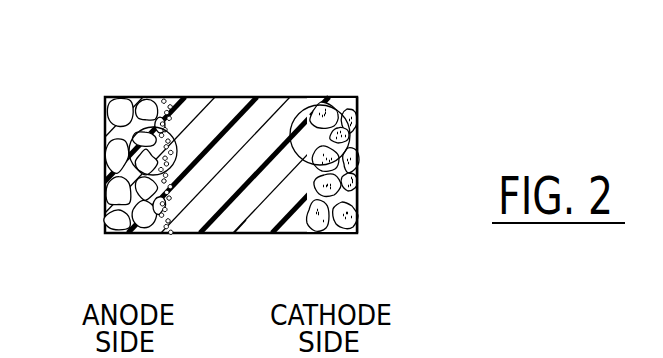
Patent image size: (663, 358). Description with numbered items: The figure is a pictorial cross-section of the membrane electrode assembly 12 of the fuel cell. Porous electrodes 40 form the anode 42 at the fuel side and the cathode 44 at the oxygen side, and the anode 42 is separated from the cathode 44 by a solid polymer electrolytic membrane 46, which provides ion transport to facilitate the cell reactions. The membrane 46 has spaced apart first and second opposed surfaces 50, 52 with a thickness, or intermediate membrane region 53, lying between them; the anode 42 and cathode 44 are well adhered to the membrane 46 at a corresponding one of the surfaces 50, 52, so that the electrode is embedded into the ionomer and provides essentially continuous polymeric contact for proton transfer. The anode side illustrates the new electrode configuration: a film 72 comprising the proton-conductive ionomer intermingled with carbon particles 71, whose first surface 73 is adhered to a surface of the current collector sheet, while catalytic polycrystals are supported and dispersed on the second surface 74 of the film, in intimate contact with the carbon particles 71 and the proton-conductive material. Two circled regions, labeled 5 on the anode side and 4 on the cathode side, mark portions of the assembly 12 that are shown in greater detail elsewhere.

The membrane electrode assembly 12 is at (207, 174).
The cathode detail region 4 is at (352, 130).
The anode detail region 5 is at (108, 162).
The porous electrodes 40 is at (239, 135).
The anode 42 is at (88, 138).
The cathode 44 is at (386, 140).
The solid polymer electrolytic membrane 46 is at (277, 97).
The first surface 50 is at (182, 233).
The second surface 52 is at (311, 108).
The intermediate membrane region 53 is at (225, 106).
The carbon particles 71 is at (100, 121).
The film 72 is at (118, 97).
The first surface of the film 73 is at (107, 183).
The second surface of the film 74 is at (172, 98).